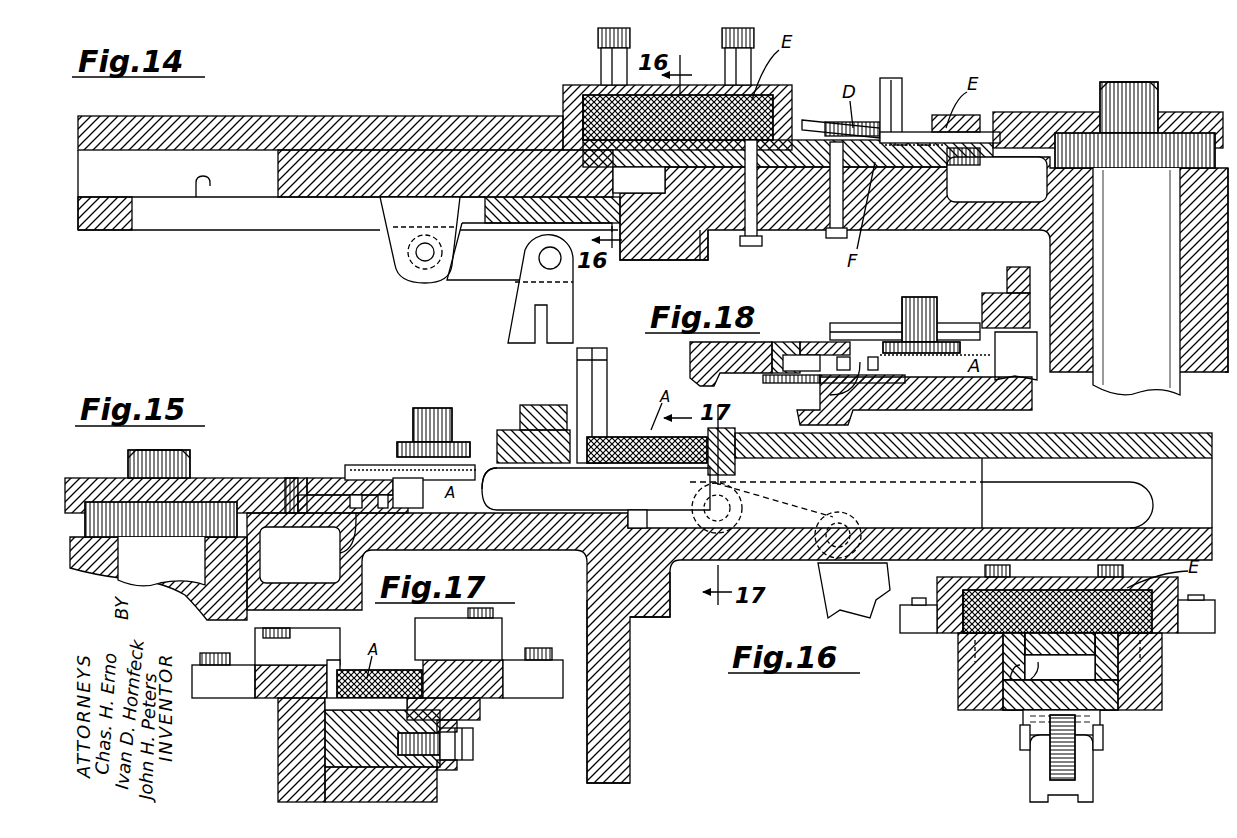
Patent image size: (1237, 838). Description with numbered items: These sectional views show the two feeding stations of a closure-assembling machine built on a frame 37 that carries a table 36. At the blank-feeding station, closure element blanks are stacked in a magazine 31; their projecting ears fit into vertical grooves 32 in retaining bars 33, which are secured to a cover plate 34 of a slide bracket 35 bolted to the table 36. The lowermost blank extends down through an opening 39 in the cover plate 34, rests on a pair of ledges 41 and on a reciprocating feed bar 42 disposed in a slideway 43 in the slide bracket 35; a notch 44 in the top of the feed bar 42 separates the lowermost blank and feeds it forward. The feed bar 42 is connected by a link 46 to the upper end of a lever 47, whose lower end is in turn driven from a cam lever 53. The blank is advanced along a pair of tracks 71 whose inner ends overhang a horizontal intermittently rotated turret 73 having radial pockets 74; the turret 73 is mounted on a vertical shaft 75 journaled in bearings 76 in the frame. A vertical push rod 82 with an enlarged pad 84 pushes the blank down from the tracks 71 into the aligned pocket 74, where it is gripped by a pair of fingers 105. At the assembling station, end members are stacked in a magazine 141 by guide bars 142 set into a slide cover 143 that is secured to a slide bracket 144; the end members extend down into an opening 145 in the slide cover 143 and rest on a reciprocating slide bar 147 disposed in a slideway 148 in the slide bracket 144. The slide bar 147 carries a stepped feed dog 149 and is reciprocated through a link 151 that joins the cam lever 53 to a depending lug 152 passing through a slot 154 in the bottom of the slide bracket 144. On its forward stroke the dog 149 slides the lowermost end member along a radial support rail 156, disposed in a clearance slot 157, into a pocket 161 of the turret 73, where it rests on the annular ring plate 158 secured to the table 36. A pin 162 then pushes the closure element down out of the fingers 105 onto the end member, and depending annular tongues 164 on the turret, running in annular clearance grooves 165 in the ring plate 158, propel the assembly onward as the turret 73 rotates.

In FIG. 15, the magazine 31 is at (633, 418).
In FIG. 17, the magazine 31 is at (386, 662).
In FIG. 15, the vertical grooves 32 is at (604, 377).
In FIG. 15, the retaining bars 33 is at (604, 390).
In FIG. 17, the retaining bars 33 is at (378, 636).
In FIG. 15, the cover plate 34 is at (1037, 447).
In FIG. 17, the cover plate 34 is at (273, 686).
In FIG. 15, the slide bracket 35 is at (668, 600).
In FIG. 17, the slide bracket 35 is at (290, 728).
In FIG. 14, the table 36 is at (928, 212).
In FIG. 18, the table 36 is at (1020, 388).
In FIG. 15, the table 36 is at (570, 540).
In FIG. 14, the frame 37 is at (700, 261).
In FIG. 15, the frame 37 is at (620, 723).
In FIG. 15, the opening 39 is at (572, 436).
In FIG. 15, the ledges 41 is at (647, 470).
In FIG. 17, the ledges 41 is at (330, 665).
In FIG. 18, the feed bar 42 is at (1016, 356).
In FIG. 15, the feed bar 42 is at (836, 497).
In FIG. 17, the feed bar 42 is at (338, 760).
In FIG. 15, the slideway 43 is at (1132, 522).
In FIG. 17, the slideway 43 is at (318, 754).
In FIG. 15, the notch 44 is at (498, 476).
In FIG. 15, the link 46 is at (812, 503).
In FIG. 17, the link 46 is at (450, 768).
In FIG. 15, the lever 47 is at (854, 590).
In FIG. 14, the cam lever 53 is at (528, 294).
In FIG. 16, the cam lever 53 is at (1080, 784).
In FIG. 18, the tracks 71 is at (842, 323).
In FIG. 15, the tracks 71 is at (358, 465).
In FIG. 14, the turret 73 is at (1035, 126).
In FIG. 18, the turret 73 is at (753, 352).
In FIG. 15, the turret 73 is at (235, 478).
In FIG. 18, the radial pockets 74 is at (822, 342).
In FIG. 15, the radial pockets 74 is at (327, 478).
In FIG. 14, the vertical shaft 75 is at (1135, 238).
In FIG. 15, the vertical shaft 75 is at (161, 518).
In FIG. 14, the bearings 76 is at (1205, 350).
In FIG. 15, the bearings 76 is at (230, 556).
In FIG. 18, the push rod 82 is at (917, 310).
In FIG. 15, the push rod 82 is at (432, 406).
In FIG. 18, the pad 84 is at (933, 343).
In FIG. 15, the pad 84 is at (447, 446).
In FIG. 18, the fingers 105 is at (867, 356).
In FIG. 15, the fingers 105 is at (373, 492).
In FIG. 14, the magazine 141 is at (578, 80).
In FIG. 16, the magazine 141 is at (1057, 605).
In FIG. 14, the guide bars 142 is at (729, 58).
In FIG. 16, the guide bars 142 is at (1096, 573).
In FIG. 14, the slide cover 143 is at (286, 120).
In FIG. 16, the slide cover 143 is at (947, 622).
In FIG. 14, the slide bracket 144 is at (108, 233).
In FIG. 16, the slide bracket 144 is at (968, 674).
In FIG. 14, the opening 145 is at (594, 93).
In FIG. 16, the opening 145 is at (964, 582).
In FIG. 14, the slide bar 147 is at (300, 183).
In FIG. 16, the slide bar 147 is at (1012, 668).
In FIG. 14, the slideway 148 is at (191, 212).
In FIG. 16, the slideway 148 is at (1010, 682).
In FIG. 14, the stepped feed dog 149 is at (799, 128).
In FIG. 14, the link 151 is at (529, 251).
In FIG. 16, the link 151 is at (1073, 762).
In FIG. 14, the depending lug 152 is at (395, 238).
In FIG. 16, the depending lug 152 is at (1088, 718).
In FIG. 14, the slot 154 is at (333, 216).
In FIG. 16, the slot 154 is at (1118, 692).
In FIG. 14, the support rail 156 is at (778, 222).
In FIG. 16, the support rail 156 is at (1060, 641).
In FIG. 14, the clearance slot 157 is at (638, 203).
In FIG. 16, the clearance slot 157 is at (1037, 666).
In FIG. 14, the ring plate 158 is at (953, 168).
In FIG. 15, the ring plate 158 is at (356, 536).
In FIG. 14, the pocket 161 is at (982, 140).
In FIG. 14, the pin 162 is at (890, 78).
In FIG. 14, the annular tongues 164 is at (925, 132).
In FIG. 18, the annular tongues 164 is at (830, 398).
In FIG. 15, the annular tongues 164 is at (358, 492).
In FIG. 14, the annular clearance grooves 165 is at (917, 158).
In FIG. 18, the annular clearance grooves 165 is at (892, 362).
In FIG. 15, the annular clearance grooves 165 is at (402, 503).